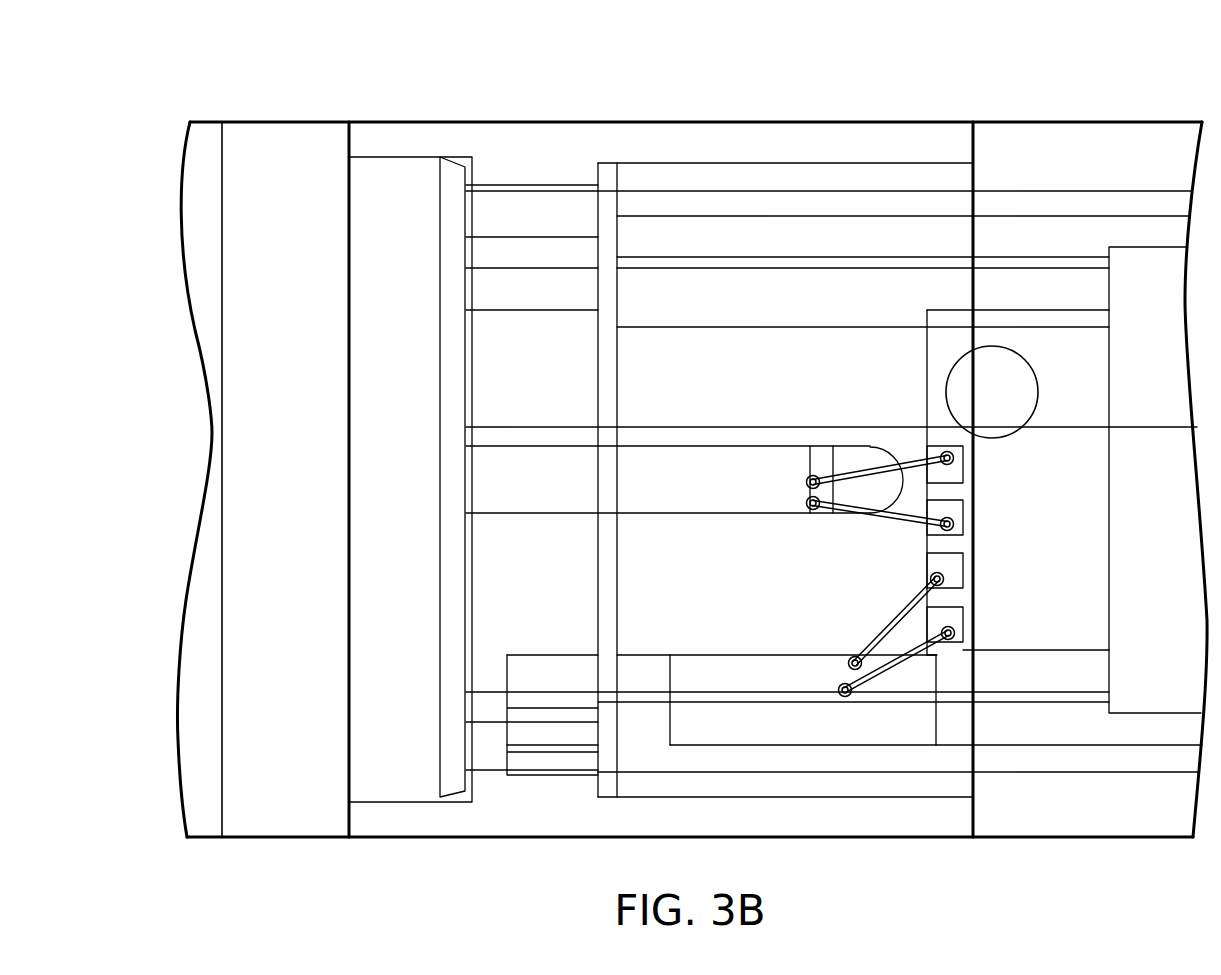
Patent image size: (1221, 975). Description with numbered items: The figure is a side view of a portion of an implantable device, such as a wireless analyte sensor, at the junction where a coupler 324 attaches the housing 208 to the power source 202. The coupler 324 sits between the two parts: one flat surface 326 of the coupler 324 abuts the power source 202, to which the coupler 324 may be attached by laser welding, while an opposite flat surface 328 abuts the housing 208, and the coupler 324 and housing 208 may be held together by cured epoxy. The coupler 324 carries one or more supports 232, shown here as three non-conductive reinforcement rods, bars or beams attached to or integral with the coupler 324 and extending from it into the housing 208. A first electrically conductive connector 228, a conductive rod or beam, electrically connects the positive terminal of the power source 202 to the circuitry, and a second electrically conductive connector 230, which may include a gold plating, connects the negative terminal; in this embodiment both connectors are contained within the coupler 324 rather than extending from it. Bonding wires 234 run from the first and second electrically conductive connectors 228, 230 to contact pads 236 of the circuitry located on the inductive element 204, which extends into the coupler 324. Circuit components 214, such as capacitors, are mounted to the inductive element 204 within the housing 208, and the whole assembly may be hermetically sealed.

The power source 202 is at (212, 128).
The inductive element 204 is at (1063, 630).
The housing 208 is at (1068, 150).
The circuit components 214 is at (1138, 625).
The first electrically conductive connector 228 is at (671, 487).
The second electrically conductive connector 230 is at (735, 689).
The supports 232 is at (1016, 251).
The bonding wires 234 is at (900, 522).
The contact pads 236 is at (958, 618).
The coupler 324 is at (562, 150).
The flat surface 326 is at (350, 140).
The flat surface 328 is at (972, 140).